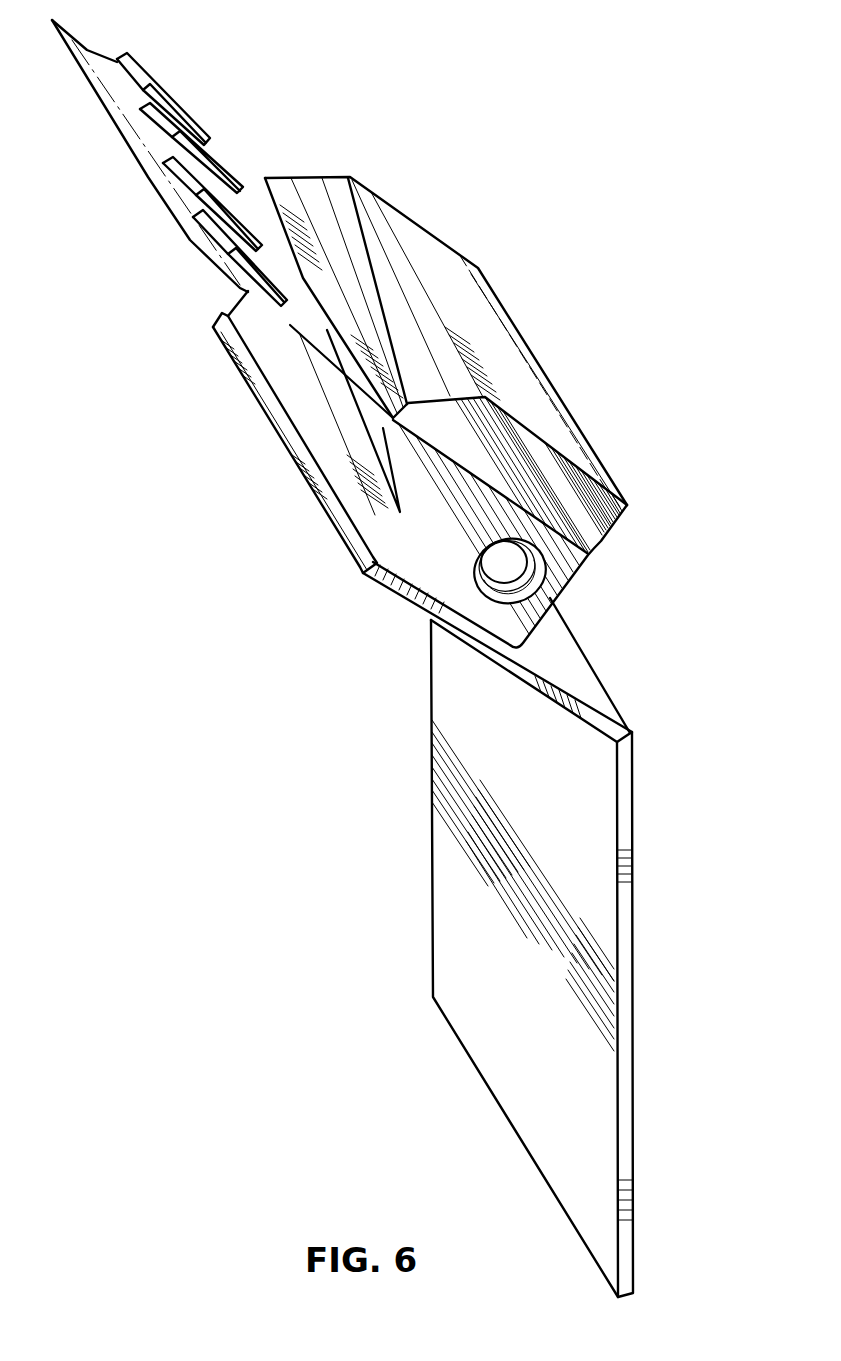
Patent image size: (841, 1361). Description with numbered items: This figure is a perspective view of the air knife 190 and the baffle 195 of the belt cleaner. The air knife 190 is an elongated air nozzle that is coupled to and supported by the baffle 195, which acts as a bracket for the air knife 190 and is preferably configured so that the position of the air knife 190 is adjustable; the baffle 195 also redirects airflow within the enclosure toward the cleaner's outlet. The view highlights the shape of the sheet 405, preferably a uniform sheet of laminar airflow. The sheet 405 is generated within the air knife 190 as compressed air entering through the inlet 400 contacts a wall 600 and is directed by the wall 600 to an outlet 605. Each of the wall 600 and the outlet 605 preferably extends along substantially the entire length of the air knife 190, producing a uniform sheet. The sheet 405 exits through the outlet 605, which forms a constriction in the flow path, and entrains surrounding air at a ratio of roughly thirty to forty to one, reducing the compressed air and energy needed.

The air knife 190 is at (632, 507).
The baffle 195 is at (633, 912).
The inlet 400 is at (518, 568).
The sheet 405 is at (212, 256).
The wall 600 is at (458, 463).
The outlet 605 is at (387, 427).